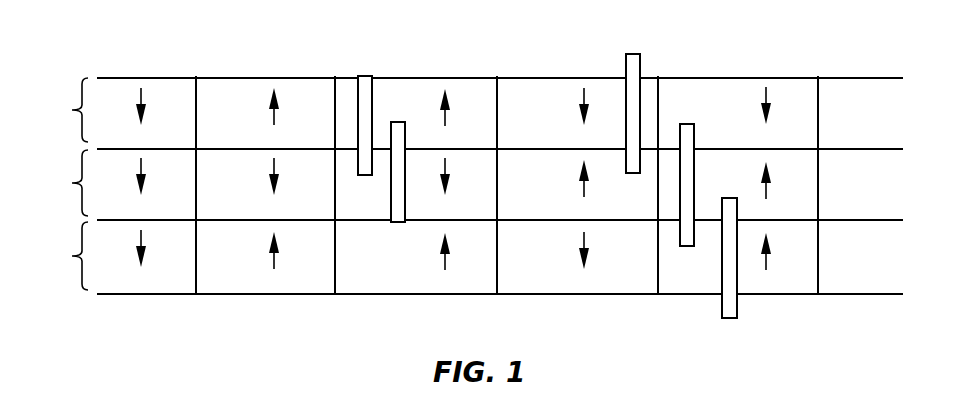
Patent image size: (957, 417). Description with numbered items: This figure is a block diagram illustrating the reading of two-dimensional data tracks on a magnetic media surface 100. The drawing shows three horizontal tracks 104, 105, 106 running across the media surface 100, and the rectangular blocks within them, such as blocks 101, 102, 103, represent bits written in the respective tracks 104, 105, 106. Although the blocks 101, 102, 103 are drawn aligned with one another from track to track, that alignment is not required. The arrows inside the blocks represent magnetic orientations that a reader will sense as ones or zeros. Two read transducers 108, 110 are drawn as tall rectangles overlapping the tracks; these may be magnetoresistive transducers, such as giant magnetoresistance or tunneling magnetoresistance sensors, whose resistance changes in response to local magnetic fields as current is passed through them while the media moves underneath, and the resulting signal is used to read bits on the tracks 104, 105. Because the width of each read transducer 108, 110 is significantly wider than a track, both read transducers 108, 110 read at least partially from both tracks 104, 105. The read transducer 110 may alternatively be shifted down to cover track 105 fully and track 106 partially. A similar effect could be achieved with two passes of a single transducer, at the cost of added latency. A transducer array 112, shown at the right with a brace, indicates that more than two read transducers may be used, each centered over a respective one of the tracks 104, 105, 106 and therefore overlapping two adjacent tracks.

The magnetic media surface 100 is at (688, 366).
The block 101 is at (178, 142).
The block 102 is at (178, 212).
The block 103 is at (178, 286).
The track 104 is at (55, 110).
The track 105 is at (55, 183).
The track 106 is at (55, 256).
The read transducer 108 is at (365, 76).
The read transducer 110 is at (397, 130).
The transducer array 112 is at (773, 43).